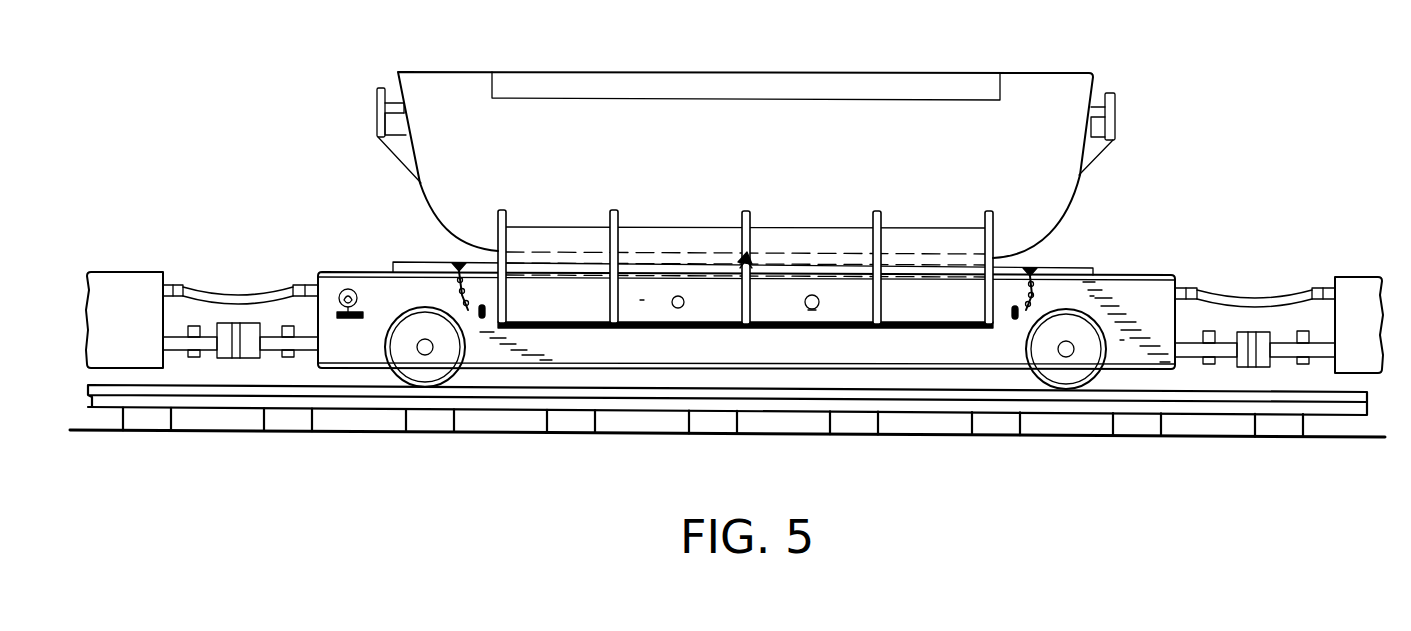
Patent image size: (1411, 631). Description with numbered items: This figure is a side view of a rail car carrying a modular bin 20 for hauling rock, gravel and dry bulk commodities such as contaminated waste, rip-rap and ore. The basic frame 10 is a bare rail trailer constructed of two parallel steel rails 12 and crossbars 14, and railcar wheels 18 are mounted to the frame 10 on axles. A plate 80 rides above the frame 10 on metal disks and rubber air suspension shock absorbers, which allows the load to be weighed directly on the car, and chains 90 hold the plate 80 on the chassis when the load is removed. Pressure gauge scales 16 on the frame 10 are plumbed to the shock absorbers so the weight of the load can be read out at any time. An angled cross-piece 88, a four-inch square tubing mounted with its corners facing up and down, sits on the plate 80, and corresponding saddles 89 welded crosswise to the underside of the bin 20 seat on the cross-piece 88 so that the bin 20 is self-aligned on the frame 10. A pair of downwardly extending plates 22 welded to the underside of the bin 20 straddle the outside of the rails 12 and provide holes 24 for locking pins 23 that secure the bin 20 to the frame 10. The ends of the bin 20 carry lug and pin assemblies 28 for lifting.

The frame 10 is at (1177, 276).
The T-1 steel rails 12 is at (1132, 292).
The crossbars 14 is at (320, 312).
The pressure gauge scales 16 is at (347, 289).
The railcar wheels 18 is at (448, 382).
The bin 20 is at (457, 88).
The plates 22 is at (938, 308).
The locking pins 23 is at (677, 310).
The holes 24 is at (806, 310).
The lug and pin assemblies 28 is at (376, 100).
The plate 80 is at (420, 262).
The angled cross-piece 88 is at (740, 272).
The saddles 89 is at (738, 260).
The chains 90 is at (453, 297).